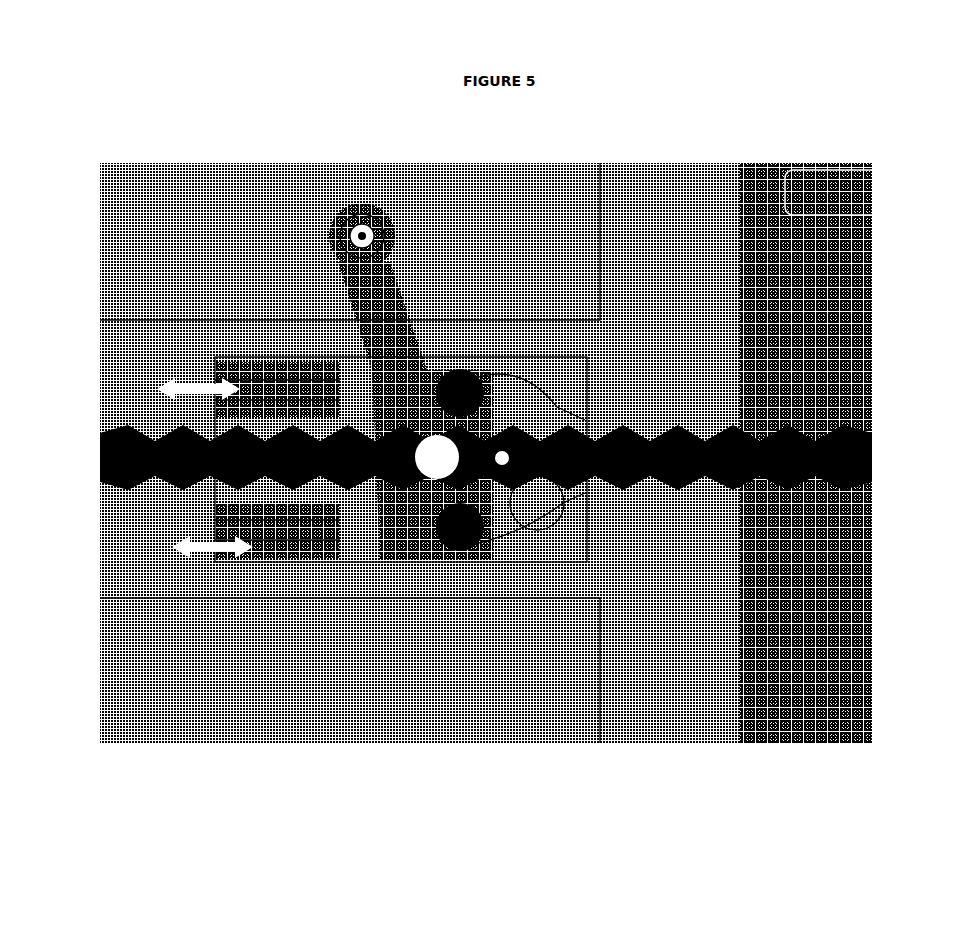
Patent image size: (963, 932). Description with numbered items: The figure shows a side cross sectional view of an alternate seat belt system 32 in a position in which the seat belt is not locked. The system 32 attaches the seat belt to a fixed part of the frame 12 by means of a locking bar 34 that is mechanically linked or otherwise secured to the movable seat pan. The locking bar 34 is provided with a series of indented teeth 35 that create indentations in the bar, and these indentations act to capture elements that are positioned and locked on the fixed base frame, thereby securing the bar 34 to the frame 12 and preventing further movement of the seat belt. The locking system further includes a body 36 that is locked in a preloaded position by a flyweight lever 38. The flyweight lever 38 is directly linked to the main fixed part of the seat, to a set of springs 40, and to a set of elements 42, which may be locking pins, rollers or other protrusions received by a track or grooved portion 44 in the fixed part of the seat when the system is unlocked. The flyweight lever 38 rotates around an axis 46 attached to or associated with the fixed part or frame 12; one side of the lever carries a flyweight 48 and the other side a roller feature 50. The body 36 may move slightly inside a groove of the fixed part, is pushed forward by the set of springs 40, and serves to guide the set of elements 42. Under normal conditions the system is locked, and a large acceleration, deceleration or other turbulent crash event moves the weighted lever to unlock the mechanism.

The frame 12 is at (308, 690).
The seat belt system 32 is at (273, 160).
The locking bar 34 is at (641, 427).
The indented teeth 35 is at (668, 427).
The body 36 is at (285, 560).
The flyweight lever 38 is at (407, 217).
The set of springs 40 is at (192, 378).
The elements 42 is at (460, 555).
The grooved portion 44 is at (520, 517).
The axis 46 is at (422, 520).
The flyweight 48 is at (362, 197).
The roller feature 50 is at (323, 365).